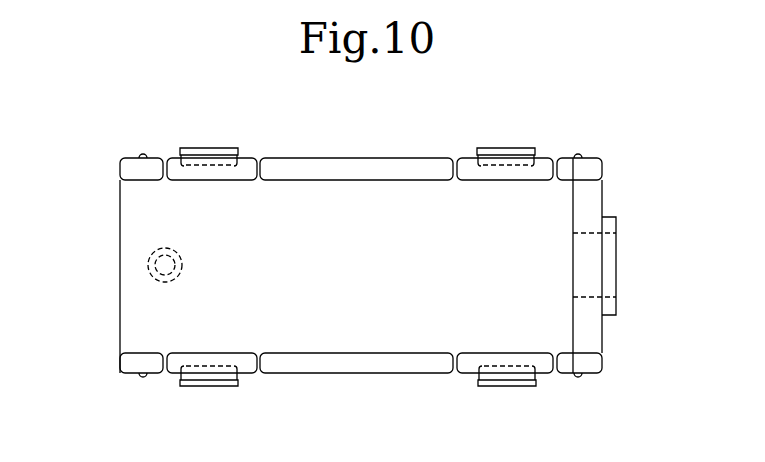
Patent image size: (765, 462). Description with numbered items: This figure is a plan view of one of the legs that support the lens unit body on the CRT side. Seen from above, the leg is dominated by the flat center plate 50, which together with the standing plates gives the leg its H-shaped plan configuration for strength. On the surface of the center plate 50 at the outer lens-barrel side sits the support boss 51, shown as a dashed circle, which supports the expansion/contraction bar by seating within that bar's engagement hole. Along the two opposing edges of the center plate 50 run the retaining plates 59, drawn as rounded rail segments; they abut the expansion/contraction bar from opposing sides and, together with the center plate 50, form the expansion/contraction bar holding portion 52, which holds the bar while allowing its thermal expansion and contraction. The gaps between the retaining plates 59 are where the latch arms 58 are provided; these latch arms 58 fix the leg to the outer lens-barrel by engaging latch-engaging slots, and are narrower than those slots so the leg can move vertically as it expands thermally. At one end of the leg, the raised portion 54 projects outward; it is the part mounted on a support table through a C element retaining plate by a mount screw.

The center plate 50 is at (418, 203).
The support boss 51 is at (148, 268).
The expansion/contraction bar holding portion 52 is at (319, 217).
The raised portion 54 is at (617, 252).
The latch arm 58 is at (227, 148).
The retaining plate 59 is at (162, 166).